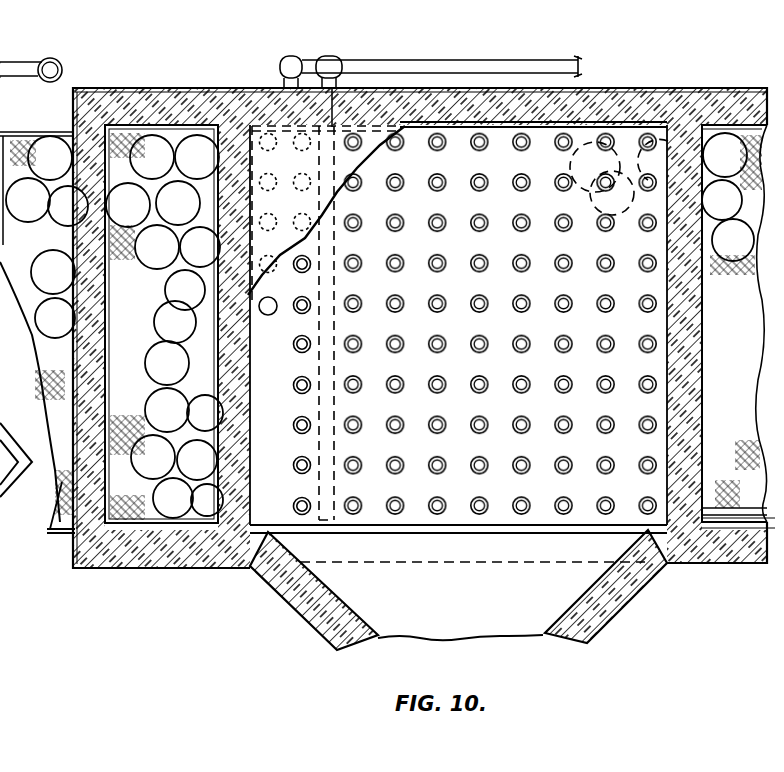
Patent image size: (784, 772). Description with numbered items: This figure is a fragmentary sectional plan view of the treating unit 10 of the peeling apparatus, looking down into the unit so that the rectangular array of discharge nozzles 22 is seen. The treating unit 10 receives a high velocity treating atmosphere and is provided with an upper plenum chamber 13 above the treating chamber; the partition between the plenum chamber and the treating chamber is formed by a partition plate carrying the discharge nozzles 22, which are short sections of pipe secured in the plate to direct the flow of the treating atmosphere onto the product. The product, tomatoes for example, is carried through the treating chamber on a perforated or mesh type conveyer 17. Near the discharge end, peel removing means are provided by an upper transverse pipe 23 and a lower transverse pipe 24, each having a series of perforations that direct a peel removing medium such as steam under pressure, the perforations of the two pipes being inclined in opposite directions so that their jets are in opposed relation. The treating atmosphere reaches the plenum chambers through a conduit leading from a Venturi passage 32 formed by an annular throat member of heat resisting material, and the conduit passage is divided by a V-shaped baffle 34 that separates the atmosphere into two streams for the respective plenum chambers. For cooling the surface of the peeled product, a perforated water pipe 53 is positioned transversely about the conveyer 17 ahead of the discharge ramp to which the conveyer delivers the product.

The treating unit 10 is at (127, 61).
The upper plenum chamber 13 is at (455, 140).
The conveyer 17 is at (60, 534).
The discharge nozzles 22 is at (608, 136).
The upper transverse pipe 23 is at (348, 92).
The lower transverse pipe 24 is at (268, 90).
The Venturi passage 32 is at (475, 624).
The V-shaped baffle 34 is at (497, 531).
The perforated water pipe 53 is at (114, 326).